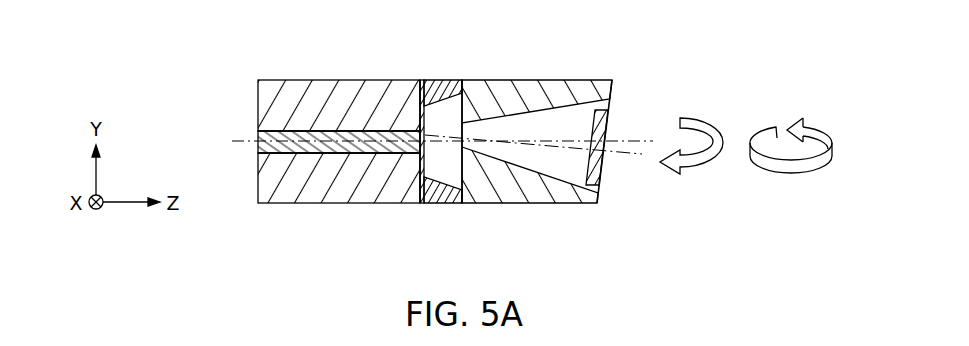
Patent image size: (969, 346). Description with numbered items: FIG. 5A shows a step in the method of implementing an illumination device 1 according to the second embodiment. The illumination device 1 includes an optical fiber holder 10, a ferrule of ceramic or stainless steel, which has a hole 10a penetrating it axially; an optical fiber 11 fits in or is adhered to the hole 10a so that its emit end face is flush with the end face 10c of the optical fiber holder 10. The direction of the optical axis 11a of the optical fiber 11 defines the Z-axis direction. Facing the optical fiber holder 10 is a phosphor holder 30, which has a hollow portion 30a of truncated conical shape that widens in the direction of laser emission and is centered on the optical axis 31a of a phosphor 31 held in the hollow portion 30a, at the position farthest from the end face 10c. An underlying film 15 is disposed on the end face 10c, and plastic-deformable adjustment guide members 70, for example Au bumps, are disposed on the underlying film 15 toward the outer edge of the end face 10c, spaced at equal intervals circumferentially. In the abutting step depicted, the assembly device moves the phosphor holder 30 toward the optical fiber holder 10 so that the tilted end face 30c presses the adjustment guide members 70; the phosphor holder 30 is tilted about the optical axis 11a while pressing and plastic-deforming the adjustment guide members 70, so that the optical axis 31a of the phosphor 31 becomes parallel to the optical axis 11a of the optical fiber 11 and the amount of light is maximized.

The illumination device 1 is at (222, 68).
The optical fiber holder 10 is at (375, 193).
The hole 10a is at (331, 157).
The end face 10c is at (418, 106).
The optical fiber 11 is at (258, 147).
The optical axis 11a is at (299, 157).
The underlying film 15 is at (422, 80).
The adjustment guide members 70 is at (441, 90).
The phosphor holder 30 is at (522, 192).
The hollow portion 30a is at (567, 170).
The end face 30c is at (467, 107).
The phosphor 31 is at (603, 119).
The optical axis 31a is at (632, 155).